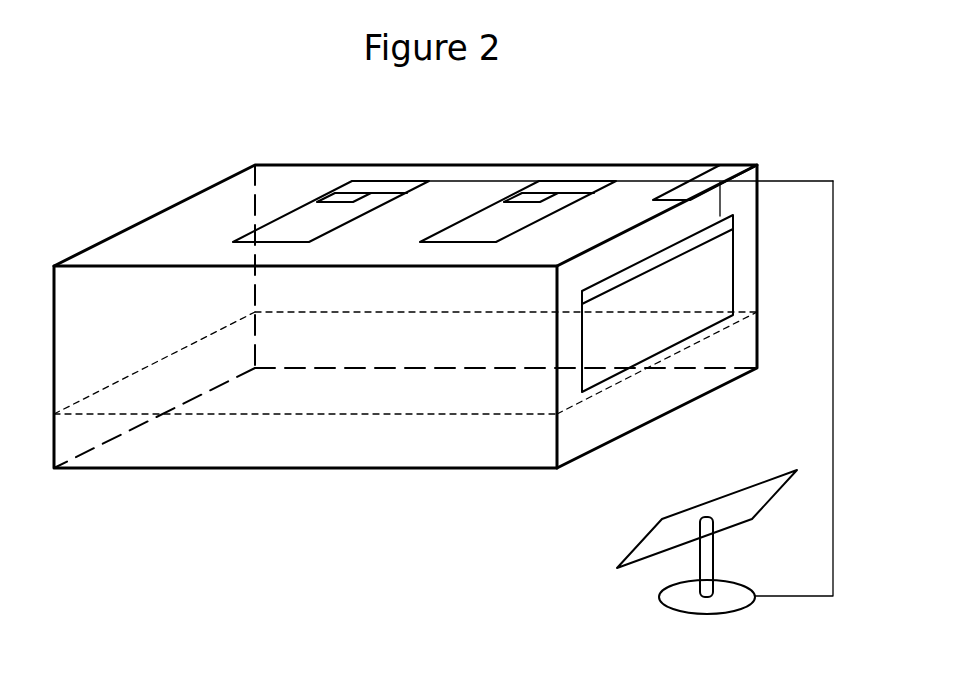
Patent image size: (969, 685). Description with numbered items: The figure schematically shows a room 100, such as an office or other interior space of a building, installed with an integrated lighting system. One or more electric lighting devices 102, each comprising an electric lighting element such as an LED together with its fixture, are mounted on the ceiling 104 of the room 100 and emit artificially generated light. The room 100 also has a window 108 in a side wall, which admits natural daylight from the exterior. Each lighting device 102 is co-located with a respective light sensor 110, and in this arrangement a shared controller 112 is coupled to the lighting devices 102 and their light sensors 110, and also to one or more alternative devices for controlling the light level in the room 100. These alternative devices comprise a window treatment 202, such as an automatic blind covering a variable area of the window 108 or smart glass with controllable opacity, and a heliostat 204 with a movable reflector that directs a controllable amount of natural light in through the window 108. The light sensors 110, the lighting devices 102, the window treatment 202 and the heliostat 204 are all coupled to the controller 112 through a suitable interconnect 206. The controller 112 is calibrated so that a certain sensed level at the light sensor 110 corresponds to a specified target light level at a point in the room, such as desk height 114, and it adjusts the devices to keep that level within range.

The room 100 is at (121, 149).
The electric lighting device 102 is at (452, 243).
The ceiling 104 is at (290, 167).
The window 108 is at (717, 287).
The light sensor 110 is at (543, 192).
The controller 112 is at (737, 172).
The desk height 114 is at (331, 412).
The window treatment 202 is at (590, 297).
The heliostat 204 is at (660, 603).
The interconnect 206 is at (578, 181).